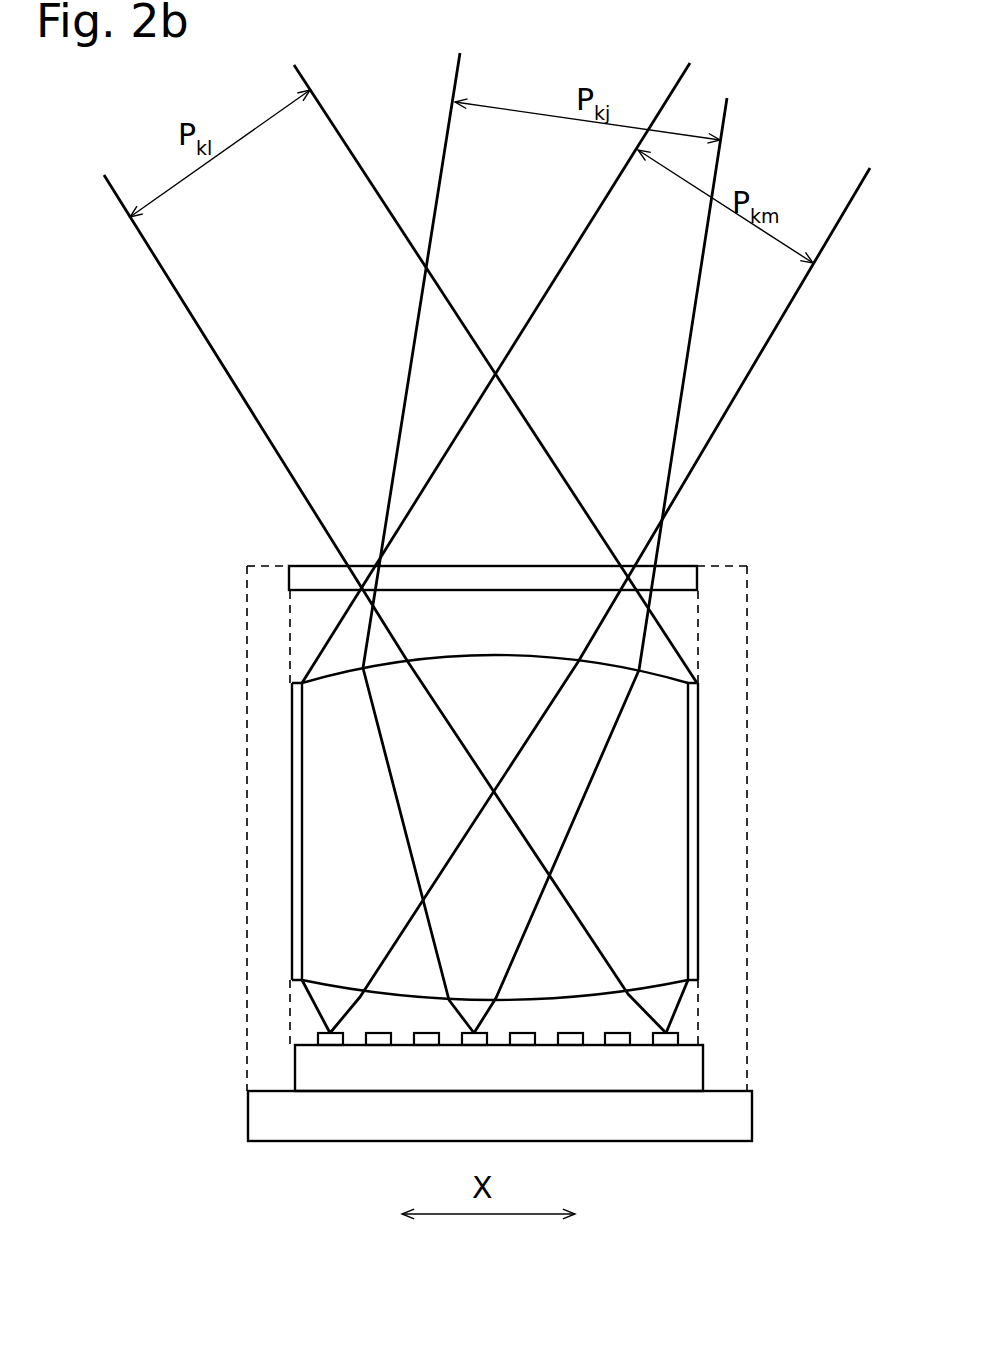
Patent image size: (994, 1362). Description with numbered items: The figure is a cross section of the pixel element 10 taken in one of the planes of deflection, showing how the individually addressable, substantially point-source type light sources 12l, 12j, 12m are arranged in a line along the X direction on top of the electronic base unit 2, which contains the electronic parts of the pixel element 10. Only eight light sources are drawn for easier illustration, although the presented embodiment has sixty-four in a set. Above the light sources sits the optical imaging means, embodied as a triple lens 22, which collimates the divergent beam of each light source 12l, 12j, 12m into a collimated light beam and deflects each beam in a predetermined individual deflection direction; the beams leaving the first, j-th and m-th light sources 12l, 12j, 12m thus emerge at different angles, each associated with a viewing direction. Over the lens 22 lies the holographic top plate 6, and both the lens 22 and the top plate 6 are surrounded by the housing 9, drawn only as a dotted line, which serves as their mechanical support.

The holographic top plate 6 is at (697, 585).
The triple lens 22 is at (699, 719).
The housing 9 is at (748, 825).
The pixel element 10 is at (768, 1133).
The light source 12m is at (320, 1033).
The light source 12j is at (457, 1045).
The light source 12l is at (674, 1031).
The electronic base unit 2 is at (728, 1103).